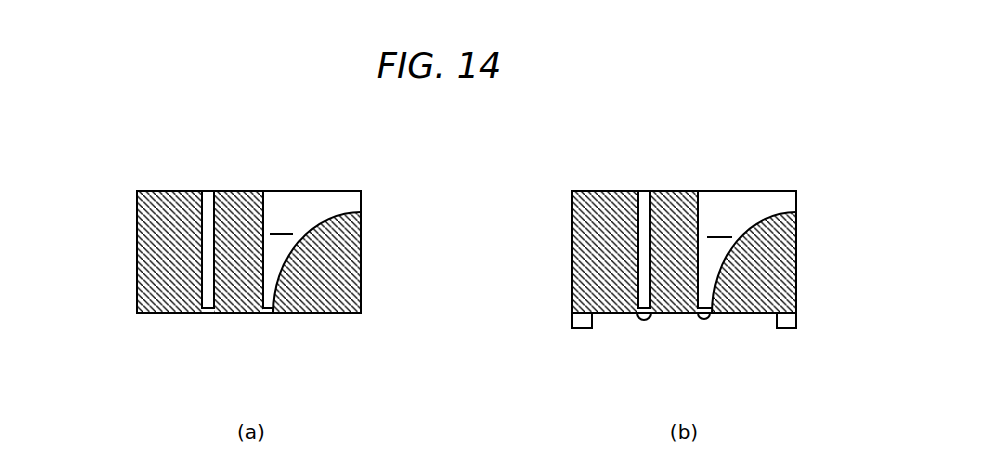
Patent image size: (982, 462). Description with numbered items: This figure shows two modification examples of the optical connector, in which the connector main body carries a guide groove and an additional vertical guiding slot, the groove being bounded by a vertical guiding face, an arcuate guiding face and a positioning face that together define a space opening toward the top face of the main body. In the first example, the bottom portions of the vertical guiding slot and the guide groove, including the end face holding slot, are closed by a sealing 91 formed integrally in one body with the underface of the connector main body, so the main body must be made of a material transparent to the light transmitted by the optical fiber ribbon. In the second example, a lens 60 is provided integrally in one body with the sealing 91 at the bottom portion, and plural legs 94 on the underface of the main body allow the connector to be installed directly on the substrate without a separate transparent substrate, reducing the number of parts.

The sealing 91 is at (268, 313).
The lens 60 is at (642, 320).
The legs 94 is at (797, 320).